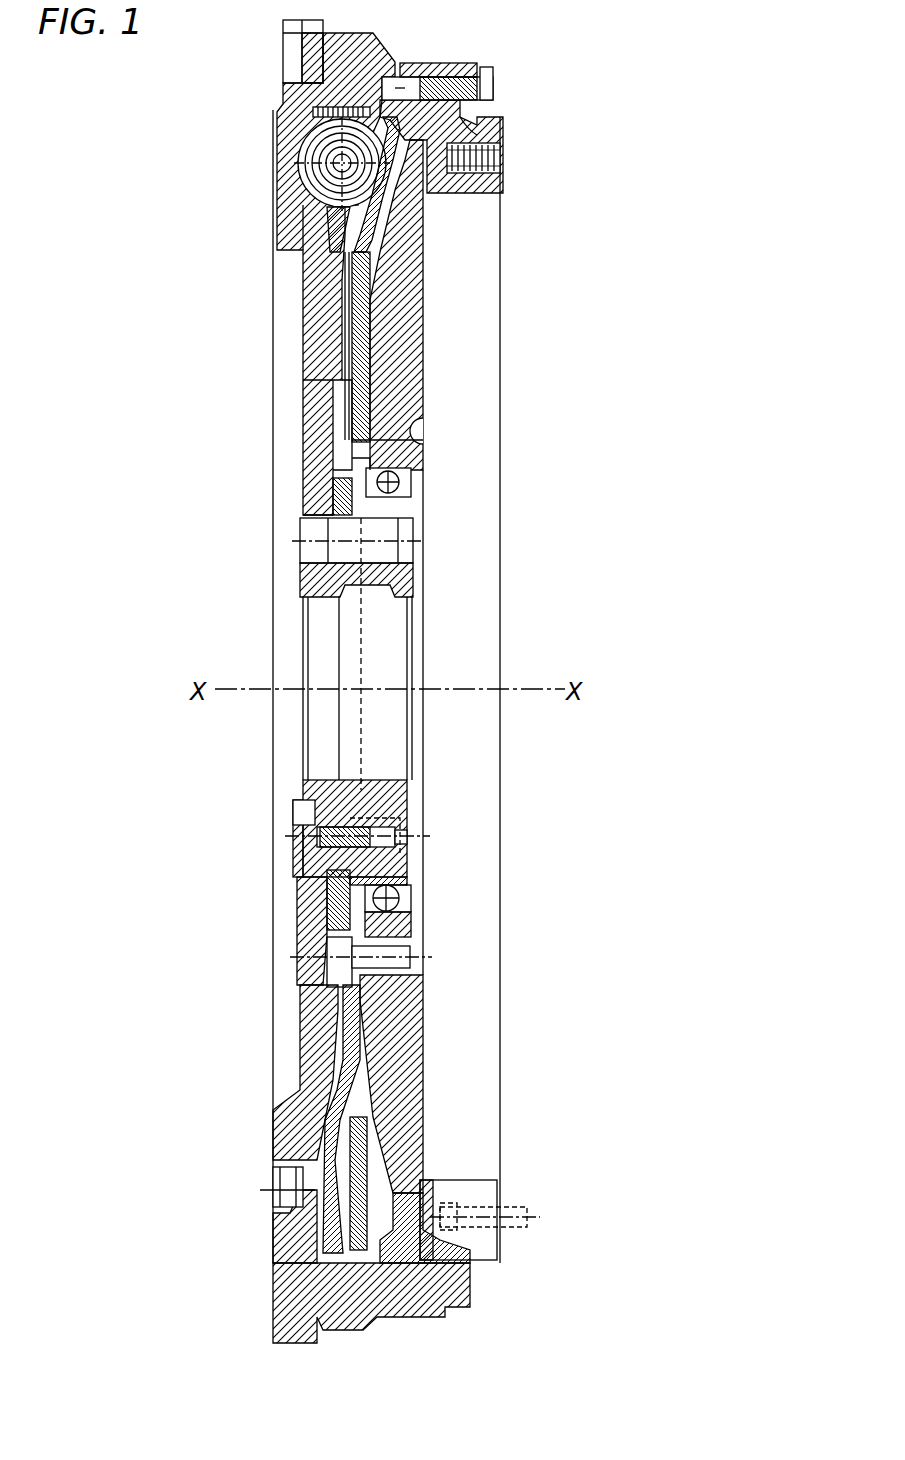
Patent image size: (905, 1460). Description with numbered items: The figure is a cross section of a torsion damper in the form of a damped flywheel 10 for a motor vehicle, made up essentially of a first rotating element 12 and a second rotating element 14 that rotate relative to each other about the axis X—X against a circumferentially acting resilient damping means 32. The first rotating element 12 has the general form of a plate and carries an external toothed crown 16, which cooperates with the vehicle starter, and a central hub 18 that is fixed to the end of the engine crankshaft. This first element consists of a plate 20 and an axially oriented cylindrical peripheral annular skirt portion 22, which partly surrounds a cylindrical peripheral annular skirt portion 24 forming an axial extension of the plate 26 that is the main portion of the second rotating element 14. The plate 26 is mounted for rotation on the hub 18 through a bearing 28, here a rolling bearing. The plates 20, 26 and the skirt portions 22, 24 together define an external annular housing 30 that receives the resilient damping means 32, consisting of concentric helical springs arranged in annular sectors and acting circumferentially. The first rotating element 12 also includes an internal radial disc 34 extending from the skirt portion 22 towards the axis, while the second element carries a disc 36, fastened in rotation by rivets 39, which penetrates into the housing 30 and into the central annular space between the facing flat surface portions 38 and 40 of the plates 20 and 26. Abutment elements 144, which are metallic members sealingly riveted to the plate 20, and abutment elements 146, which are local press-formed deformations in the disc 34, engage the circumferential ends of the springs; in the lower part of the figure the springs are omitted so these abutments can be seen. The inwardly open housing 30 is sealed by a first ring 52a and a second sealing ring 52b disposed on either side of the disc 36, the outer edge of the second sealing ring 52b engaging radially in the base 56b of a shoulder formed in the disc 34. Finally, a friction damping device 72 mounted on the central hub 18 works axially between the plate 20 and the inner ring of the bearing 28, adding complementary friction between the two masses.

The damped flywheel 10 is at (267, 530).
The first rotating element 12 is at (300, 447).
The second rotating element 14 is at (503, 440).
The external toothed crown 16 is at (283, 58).
The central hub 18 is at (390, 575).
The plate 20 is at (317, 350).
The cylindrical peripheral annular skirt portion 22 is at (452, 72).
The cylindrical peripheral annular skirt portion 24 is at (493, 183).
The plate 26 is at (407, 337).
The bearing 28 is at (412, 482).
The annular housing 30 is at (358, 217).
The resilient damping means 32 is at (382, 118).
The internal radial disc 34 is at (427, 230).
The disc 36 is at (337, 393).
The flat surface portion 38 is at (348, 298).
The rivets 39 is at (395, 950).
The flat surface portion 40 is at (383, 373).
The first ring 52a is at (340, 290).
The second sealing ring 52b is at (347, 260).
The base of shoulder 56b is at (327, 257).
The friction damping device 72 is at (320, 910).
The abutment elements 144 is at (290, 1222).
The abutment elements 146 is at (420, 1195).